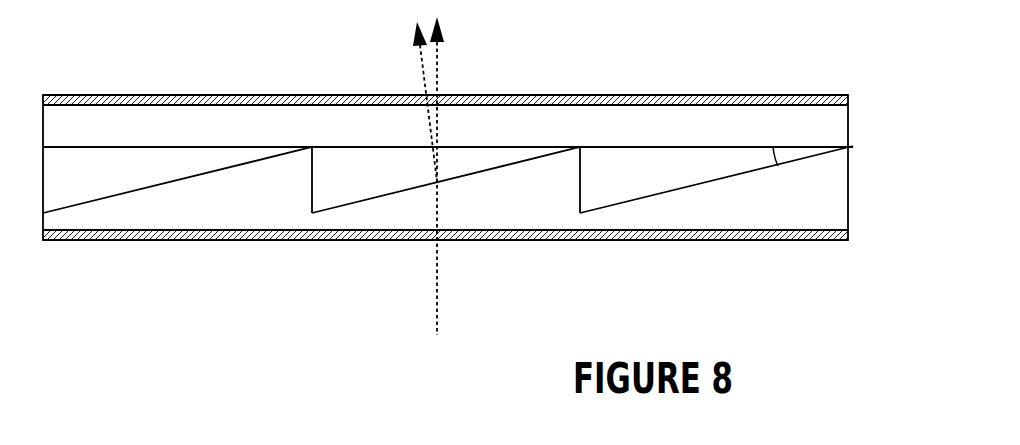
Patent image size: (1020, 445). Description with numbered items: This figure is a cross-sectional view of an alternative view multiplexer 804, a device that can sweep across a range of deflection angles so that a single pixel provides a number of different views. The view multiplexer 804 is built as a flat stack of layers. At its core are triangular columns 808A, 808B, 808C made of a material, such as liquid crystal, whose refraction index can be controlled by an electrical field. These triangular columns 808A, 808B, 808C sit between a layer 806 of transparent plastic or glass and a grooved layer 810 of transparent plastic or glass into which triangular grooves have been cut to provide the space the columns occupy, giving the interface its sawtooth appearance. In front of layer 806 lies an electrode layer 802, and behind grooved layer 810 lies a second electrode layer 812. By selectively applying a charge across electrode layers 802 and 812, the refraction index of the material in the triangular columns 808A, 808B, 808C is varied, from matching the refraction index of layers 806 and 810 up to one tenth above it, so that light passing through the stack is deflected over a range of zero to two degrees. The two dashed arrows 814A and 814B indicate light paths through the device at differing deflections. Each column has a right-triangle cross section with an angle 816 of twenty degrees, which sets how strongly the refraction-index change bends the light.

The electrode layer 802 is at (807, 95).
The view multiplexer 804 is at (580, 46).
The layer 806 is at (448, 126).
The triangular column 808A is at (148, 174).
The triangular column 808B is at (374, 175).
The triangular column 808C is at (642, 175).
The grooved layer 810 is at (744, 220).
The electrode layer 812 is at (807, 242).
The first light ray 814A is at (437, 70).
The second light ray 814B is at (423, 70).
The angle 816 is at (772, 156).